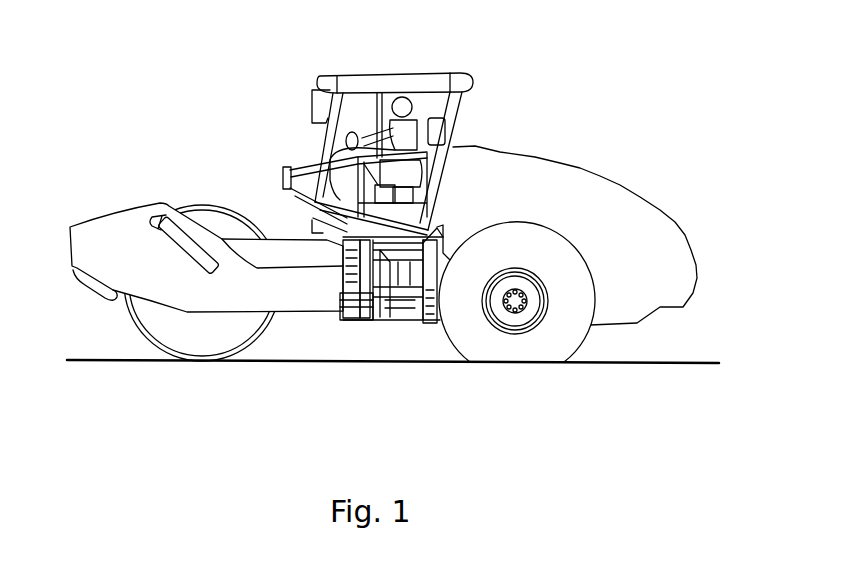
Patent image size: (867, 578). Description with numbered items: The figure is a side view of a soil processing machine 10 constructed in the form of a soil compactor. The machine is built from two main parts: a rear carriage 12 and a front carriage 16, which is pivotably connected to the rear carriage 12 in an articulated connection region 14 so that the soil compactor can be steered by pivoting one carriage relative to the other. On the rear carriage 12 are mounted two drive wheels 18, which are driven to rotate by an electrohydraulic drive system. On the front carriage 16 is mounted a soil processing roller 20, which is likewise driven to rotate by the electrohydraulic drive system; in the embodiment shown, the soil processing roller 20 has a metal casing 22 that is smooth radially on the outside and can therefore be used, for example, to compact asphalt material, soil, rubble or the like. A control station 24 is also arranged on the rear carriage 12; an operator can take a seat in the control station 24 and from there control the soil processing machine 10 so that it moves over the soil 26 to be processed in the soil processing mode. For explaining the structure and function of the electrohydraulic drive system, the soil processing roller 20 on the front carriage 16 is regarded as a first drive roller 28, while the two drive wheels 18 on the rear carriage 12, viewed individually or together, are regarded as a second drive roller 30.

The soil processing machine 10 is at (640, 85).
The rear carriage 12 is at (622, 183).
The articulated connection region 14 is at (368, 316).
The front carriage 16 is at (207, 313).
The drive wheels 18 is at (558, 342).
The soil processing roller 20 is at (260, 342).
The metal casing 22 is at (200, 200).
The control station 24 is at (460, 103).
The soil 26 is at (683, 363).
The first drive roller 28 is at (214, 391).
The second drive roller 30 is at (521, 394).